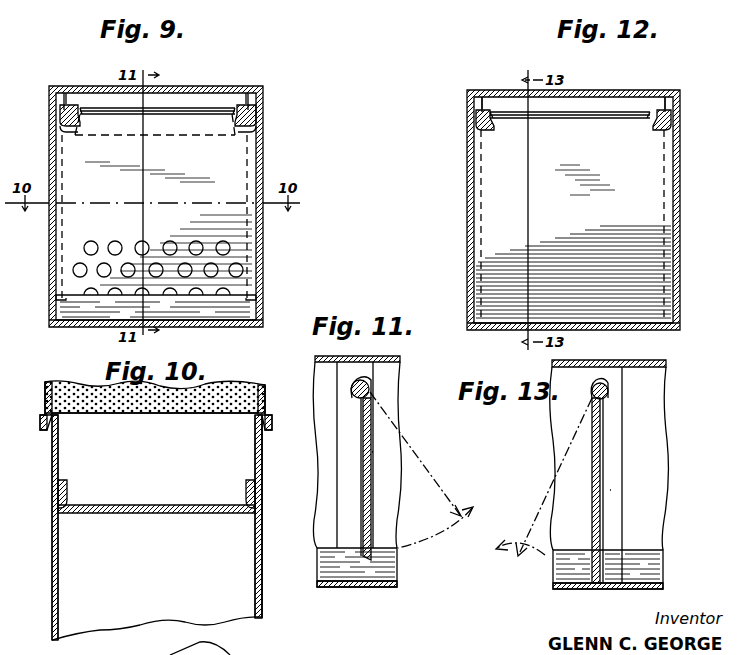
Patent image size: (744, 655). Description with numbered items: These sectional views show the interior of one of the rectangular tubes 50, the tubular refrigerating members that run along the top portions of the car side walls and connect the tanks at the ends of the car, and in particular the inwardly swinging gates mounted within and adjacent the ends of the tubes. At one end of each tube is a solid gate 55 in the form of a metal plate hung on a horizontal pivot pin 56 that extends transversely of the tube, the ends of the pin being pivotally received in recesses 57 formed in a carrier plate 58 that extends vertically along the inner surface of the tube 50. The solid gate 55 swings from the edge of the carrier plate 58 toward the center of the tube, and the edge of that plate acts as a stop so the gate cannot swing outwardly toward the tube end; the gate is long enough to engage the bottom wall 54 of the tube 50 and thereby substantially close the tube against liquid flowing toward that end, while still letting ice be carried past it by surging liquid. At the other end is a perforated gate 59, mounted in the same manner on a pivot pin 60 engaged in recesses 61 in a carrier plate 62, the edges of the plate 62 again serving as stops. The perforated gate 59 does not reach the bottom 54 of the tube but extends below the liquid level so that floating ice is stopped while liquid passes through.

In FIG. 9, the rectangular tubes 50 is at (263, 240).
In FIG. 12, the rectangular tubes 50 is at (467, 210).
In FIG. 10, the rectangular tubes 50 is at (262, 483).
In FIG. 11, the rectangular tubes 50 is at (325, 525).
In FIG. 13, the rectangular tubes 50 is at (640, 531).
In FIG. 9, the bottom walls 54 is at (236, 327).
In FIG. 12, the bottom walls 54 is at (615, 330).
In FIG. 11, the bottom walls 54 is at (356, 588).
In FIG. 13, the bottom walls 54 is at (583, 589).
In FIG. 12, the solid gate 55 is at (635, 205).
In FIG. 13, the solid gate 55 is at (592, 467).
In FIG. 12, the pivot pins 56 is at (490, 110).
In FIG. 13, the pivot pins 56 is at (603, 396).
In FIG. 12, the recesses 57 is at (478, 122).
In FIG. 13, the recesses 57 is at (597, 381).
In FIG. 12, the carrier plates 58 is at (478, 195).
In FIG. 13, the carrier plates 58 is at (613, 490).
In FIG. 9, the perforated gates 59 is at (215, 172).
In FIG. 10, the perforated gates 59 is at (212, 515).
In FIG. 11, the perforated gates 59 is at (372, 452).
In FIG. 9, the pivot pins 60 is at (73, 105).
In FIG. 11, the pivot pins 60 is at (372, 390).
In FIG. 9, the recesses 61 is at (60, 118).
In FIG. 11, the recesses 61 is at (370, 382).
In FIG. 9, the carrier plates 62 is at (60, 100).
In FIG. 10, the carrier plates 62 is at (68, 485).
In FIG. 11, the carrier plates 62 is at (345, 435).